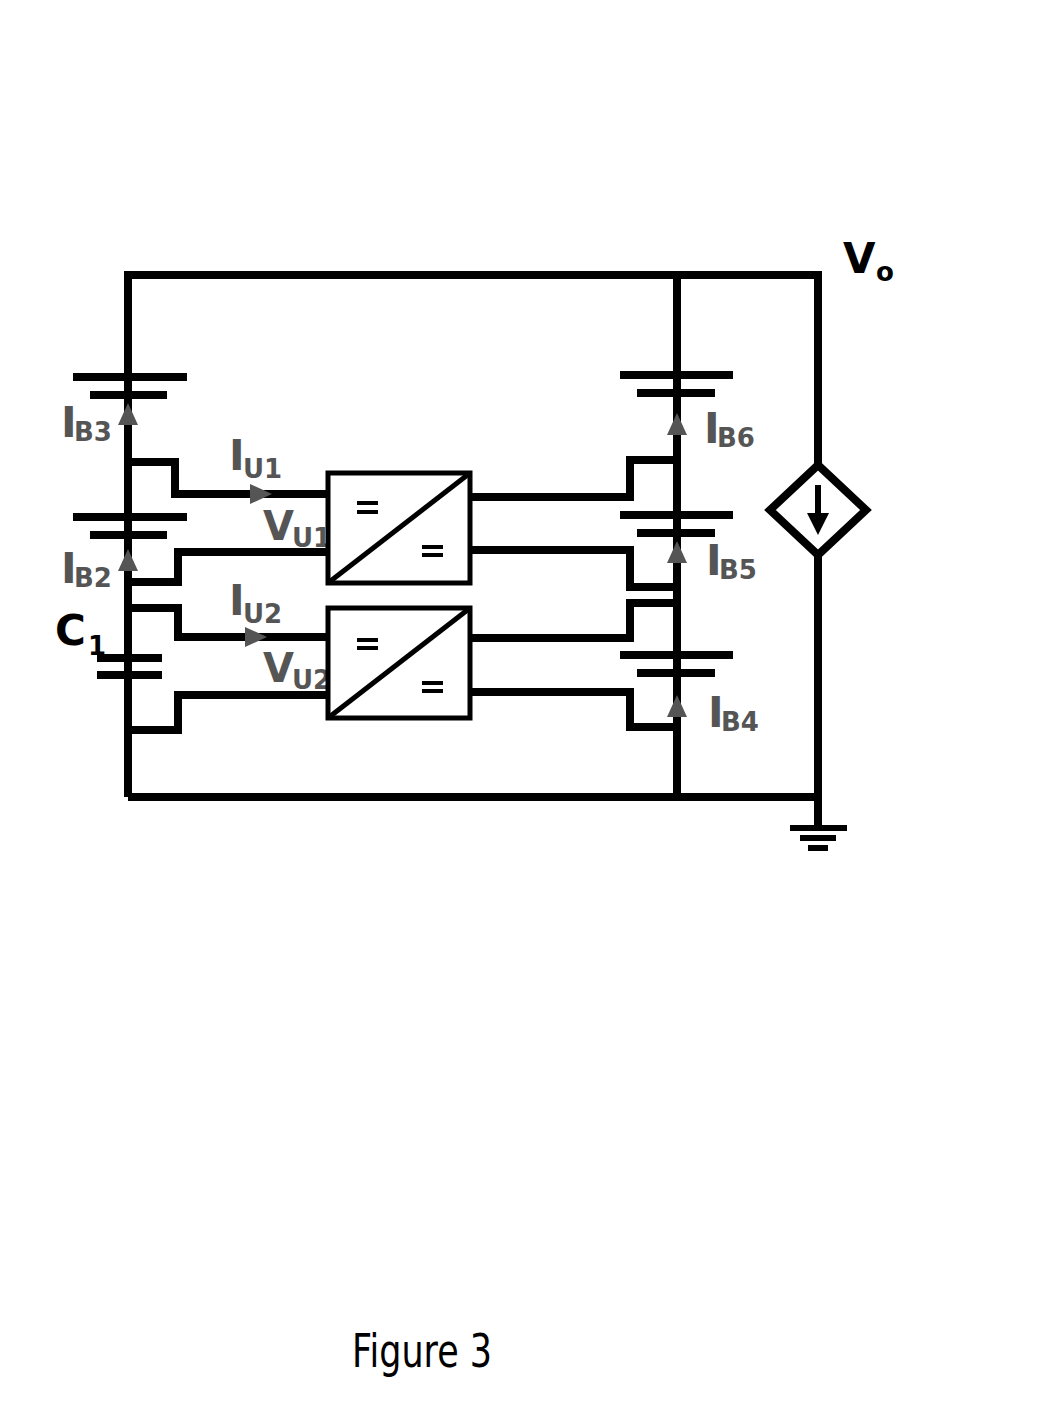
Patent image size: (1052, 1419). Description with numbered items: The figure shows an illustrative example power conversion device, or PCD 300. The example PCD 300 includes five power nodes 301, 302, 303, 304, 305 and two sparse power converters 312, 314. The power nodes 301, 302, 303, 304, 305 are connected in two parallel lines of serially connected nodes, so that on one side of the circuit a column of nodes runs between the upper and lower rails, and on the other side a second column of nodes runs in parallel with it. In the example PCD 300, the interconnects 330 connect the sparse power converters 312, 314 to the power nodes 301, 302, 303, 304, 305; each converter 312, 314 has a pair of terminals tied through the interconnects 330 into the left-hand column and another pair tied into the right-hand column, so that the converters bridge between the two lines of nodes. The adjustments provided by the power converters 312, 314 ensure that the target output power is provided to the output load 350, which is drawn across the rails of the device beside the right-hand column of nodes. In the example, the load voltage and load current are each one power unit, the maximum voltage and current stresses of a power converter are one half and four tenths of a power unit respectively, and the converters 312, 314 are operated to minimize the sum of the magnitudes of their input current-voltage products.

The power conversion device 300 is at (66, 48).
The power node 301 is at (82, 525).
The power node 302 is at (82, 385).
The power node 303 is at (720, 380).
The power node 304 is at (720, 520).
The power node 305 is at (720, 660).
The sparse power converter 312 is at (413, 574).
The sparse power converter 314 is at (413, 709).
The interconnects 330 is at (200, 465).
The output load 350 is at (851, 528).